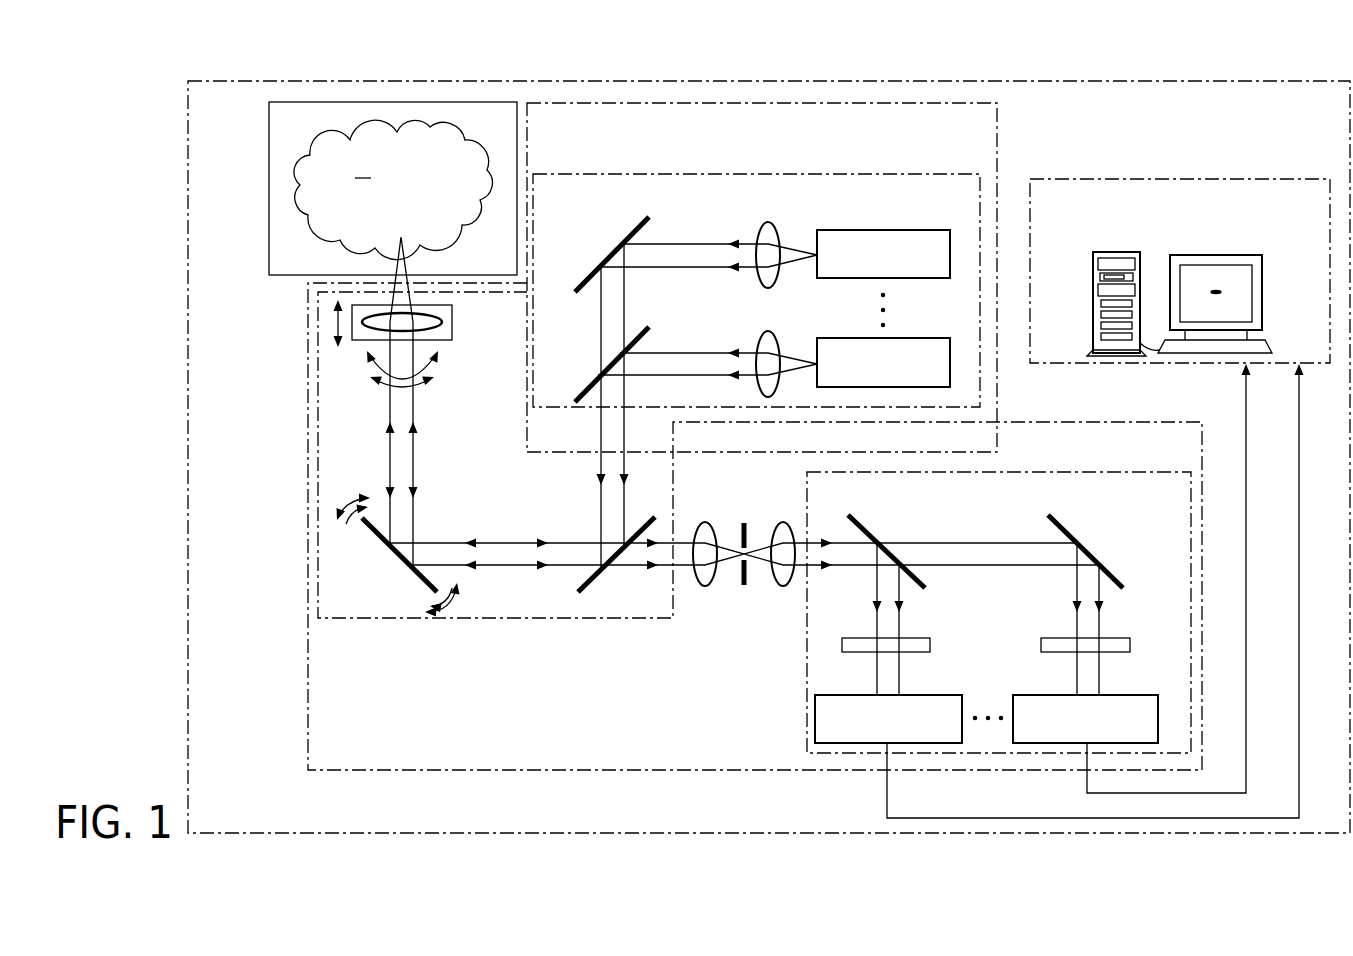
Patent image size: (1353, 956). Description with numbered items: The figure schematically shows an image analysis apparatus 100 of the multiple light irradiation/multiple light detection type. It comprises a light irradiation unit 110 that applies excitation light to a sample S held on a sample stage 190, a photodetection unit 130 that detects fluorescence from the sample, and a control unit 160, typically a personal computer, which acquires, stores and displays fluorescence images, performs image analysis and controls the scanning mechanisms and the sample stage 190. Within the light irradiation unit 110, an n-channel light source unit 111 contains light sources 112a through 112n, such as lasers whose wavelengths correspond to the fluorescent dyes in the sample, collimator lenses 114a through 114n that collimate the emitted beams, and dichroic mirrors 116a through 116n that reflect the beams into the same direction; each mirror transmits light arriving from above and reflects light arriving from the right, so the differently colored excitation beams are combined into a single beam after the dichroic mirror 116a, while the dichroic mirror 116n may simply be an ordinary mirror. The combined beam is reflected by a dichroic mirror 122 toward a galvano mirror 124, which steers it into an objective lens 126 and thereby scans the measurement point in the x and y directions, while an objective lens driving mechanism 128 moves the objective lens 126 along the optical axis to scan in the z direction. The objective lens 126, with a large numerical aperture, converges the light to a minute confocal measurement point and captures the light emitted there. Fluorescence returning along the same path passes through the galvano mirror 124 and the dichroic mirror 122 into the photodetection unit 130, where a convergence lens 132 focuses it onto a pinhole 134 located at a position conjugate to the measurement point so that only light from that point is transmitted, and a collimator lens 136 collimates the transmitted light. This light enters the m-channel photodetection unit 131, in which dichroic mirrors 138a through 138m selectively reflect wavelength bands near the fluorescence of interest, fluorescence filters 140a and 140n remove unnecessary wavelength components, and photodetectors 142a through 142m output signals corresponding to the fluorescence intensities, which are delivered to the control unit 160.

The image analysis apparatus 100 is at (1203, 80).
The light irradiation unit 110 is at (998, 128).
The light source unit 111 is at (884, 173).
The light source 112n is at (935, 229).
The light source 112a is at (935, 337).
The collimator lens 114n is at (774, 226).
The collimator lens 114a is at (774, 334).
The dichroic mirror 116n is at (596, 266).
The dichroic mirror 116a is at (596, 374).
The dichroic mirror 122 is at (612, 567).
The galvano mirror 124 is at (378, 538).
The objective lens 126 is at (468, 324).
The objective lens driving mechanism 128 is at (466, 375).
The photodetection unit 130 is at (307, 697).
The photodetection unit 131 is at (806, 695).
The convergence lens 132 is at (705, 522).
The pinhole 134 is at (744, 588).
The collimator lens 136 is at (780, 522).
The dichroic mirror 138a is at (870, 532).
The dichroic mirror 138m is at (1070, 532).
The fluorescence filter 140a is at (925, 638).
The fluorescence filter 140n is at (1125, 638).
The photodetector 142a is at (940, 695).
The photodetector 142m is at (1137, 695).
The control unit 160 is at (1228, 178).
The sample stage 190 is at (268, 129).